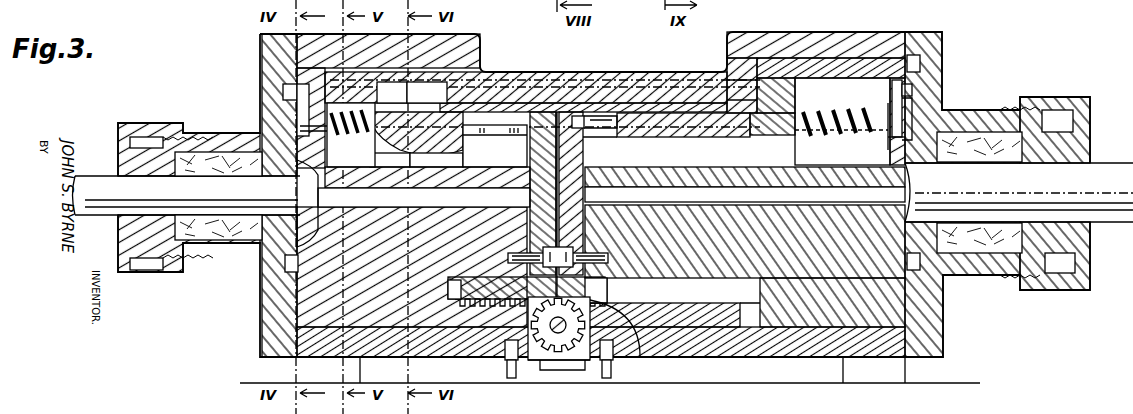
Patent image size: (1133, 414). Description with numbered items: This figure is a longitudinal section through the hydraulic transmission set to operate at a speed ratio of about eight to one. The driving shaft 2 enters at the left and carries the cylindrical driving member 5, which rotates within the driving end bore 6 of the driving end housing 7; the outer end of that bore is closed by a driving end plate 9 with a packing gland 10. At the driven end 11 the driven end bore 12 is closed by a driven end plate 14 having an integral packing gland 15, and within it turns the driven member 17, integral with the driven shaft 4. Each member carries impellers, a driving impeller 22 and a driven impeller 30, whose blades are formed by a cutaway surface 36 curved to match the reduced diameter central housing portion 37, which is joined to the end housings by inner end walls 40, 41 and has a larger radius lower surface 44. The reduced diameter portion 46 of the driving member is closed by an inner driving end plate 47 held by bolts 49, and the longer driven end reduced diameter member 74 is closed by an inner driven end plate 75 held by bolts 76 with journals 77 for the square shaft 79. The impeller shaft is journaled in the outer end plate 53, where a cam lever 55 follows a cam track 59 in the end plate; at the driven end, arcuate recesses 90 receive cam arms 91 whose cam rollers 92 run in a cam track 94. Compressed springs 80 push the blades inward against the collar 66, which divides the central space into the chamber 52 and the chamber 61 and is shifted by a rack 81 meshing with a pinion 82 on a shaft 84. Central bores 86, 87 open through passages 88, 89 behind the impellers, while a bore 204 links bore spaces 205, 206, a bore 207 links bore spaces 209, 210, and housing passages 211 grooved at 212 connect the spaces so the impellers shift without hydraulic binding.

The driving shaft 2 is at (96, 176).
The driven shaft 4 is at (1112, 170).
The driving member 5 is at (300, 325).
The driving end bore 6 is at (320, 332).
The driving end housing 7 is at (468, 42).
The driving end plate 9 is at (266, 81).
The packing gland 10 is at (222, 130).
The driven end 11 is at (780, 32).
The driven end bore 12 is at (806, 58).
The driven end plate 14 is at (942, 45).
The packing gland 15 is at (988, 132).
The driven member 17 is at (923, 310).
The driving impeller 22 is at (441, 163).
The driven impeller 30 is at (795, 96).
The cutaway surface 36 is at (455, 92).
The central housing portion 37 is at (500, 103).
The inner end wall 40 is at (478, 72).
The inner end wall 41 is at (733, 42).
The lower surface 44 is at (672, 345).
The reduced diameter portion 46 is at (490, 300).
The inner driving end plate 47 is at (532, 139).
The bolts 49 is at (526, 252).
The chamber 52 is at (456, 300).
The outer end plate 53 is at (292, 84).
The cam lever 55 is at (300, 111).
The cam track 59 is at (290, 262).
The chamber 61 is at (698, 298).
The collar 66 is at (560, 112).
The driven end reduced diameter member 74 is at (740, 278).
The inner driven end plate 75 is at (574, 116).
The bolts 76 is at (616, 280).
The journals 77 is at (590, 124).
The square shaft 79 is at (848, 115).
The compressed springs 80 is at (858, 136).
The rack 81 is at (614, 345).
The pinion 82 is at (586, 360).
The shaft 84 is at (548, 352).
The central bore 86 is at (424, 187).
The central bore 87 is at (745, 184).
The passages 88 is at (298, 187).
The passages 89 is at (912, 171).
The arcuate recesses 90 is at (896, 80).
The cam arms 91 is at (912, 108).
The cam rollers 92 is at (910, 96).
The cam track 94 is at (930, 268).
The bore 204 is at (404, 125).
The bore space 205 is at (404, 99).
The bore space 206 is at (509, 165).
The bore 207 is at (694, 128).
The bore space 209 is at (727, 80).
The bore space 210 is at (600, 150).
The housing passages 211 is at (668, 72).
The grooves 212 is at (756, 125).